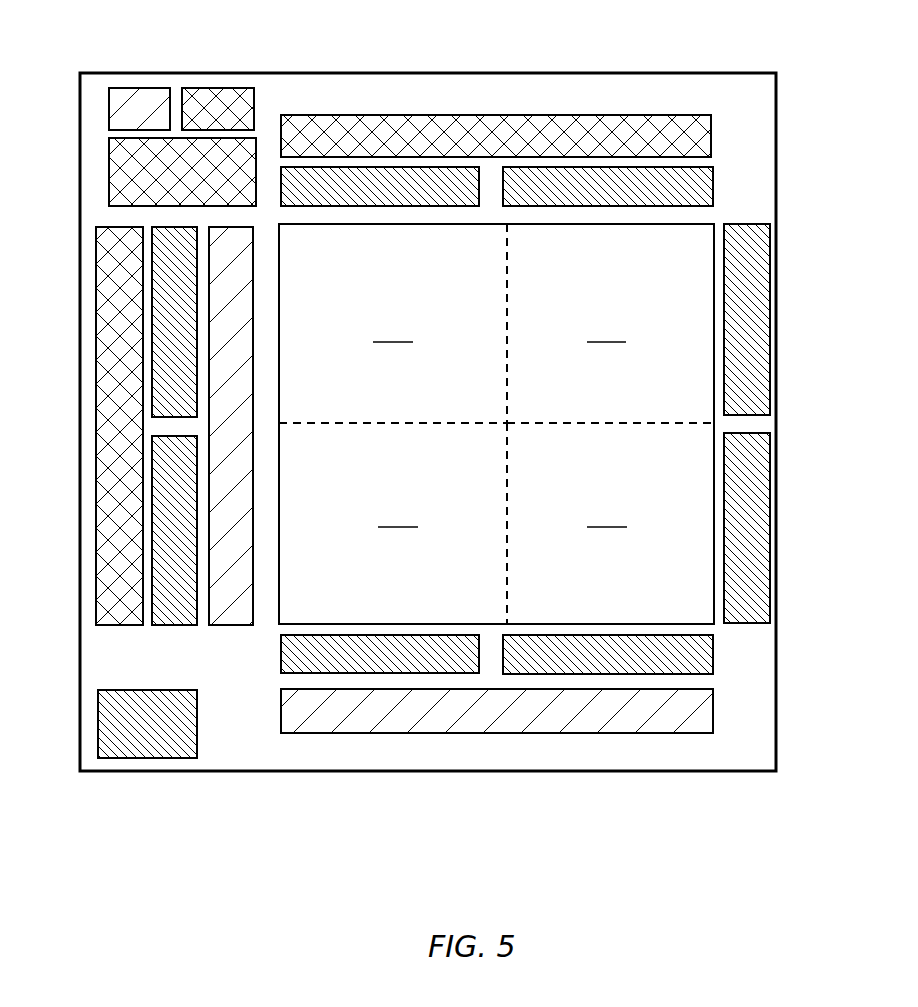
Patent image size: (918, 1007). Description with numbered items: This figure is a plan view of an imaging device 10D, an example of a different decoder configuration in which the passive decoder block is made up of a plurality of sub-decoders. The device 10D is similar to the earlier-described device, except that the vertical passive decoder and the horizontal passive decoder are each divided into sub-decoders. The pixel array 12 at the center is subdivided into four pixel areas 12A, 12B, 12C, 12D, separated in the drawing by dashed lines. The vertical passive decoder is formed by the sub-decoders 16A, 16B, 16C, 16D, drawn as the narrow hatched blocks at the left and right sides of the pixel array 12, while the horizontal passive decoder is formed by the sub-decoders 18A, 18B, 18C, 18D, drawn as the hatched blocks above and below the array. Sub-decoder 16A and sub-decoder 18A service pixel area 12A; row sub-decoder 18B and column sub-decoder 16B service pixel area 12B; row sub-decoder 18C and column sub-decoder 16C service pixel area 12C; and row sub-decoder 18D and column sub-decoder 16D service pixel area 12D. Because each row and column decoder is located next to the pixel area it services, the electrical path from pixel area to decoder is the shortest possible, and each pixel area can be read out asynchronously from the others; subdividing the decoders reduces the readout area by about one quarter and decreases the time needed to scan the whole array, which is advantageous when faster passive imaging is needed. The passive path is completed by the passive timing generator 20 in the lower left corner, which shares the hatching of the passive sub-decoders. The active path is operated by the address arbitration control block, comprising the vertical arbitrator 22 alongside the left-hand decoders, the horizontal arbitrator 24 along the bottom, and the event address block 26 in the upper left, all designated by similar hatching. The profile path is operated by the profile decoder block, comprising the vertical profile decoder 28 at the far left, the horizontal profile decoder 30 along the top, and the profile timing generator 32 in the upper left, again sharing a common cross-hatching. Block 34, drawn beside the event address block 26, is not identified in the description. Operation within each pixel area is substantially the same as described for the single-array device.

The device 10D is at (582, 810).
The pixel array 12 is at (546, 382).
The pixel area 12A is at (440, 323).
The pixel area 12B is at (610, 371).
The pixel area 12C is at (393, 475).
The pixel area 12D is at (567, 523).
The sub-decoder 16A is at (178, 226).
The column sub-decoder 16B is at (765, 302).
The column sub-decoder 16C is at (162, 626).
The column sub-decoder 16D is at (768, 487).
The sub-decoder 18A is at (280, 192).
The row sub-decoder 18B is at (713, 185).
The row sub-decoder 18C is at (280, 652).
The row sub-decoder 18D is at (715, 653).
The passive timing generator 20 is at (197, 760).
The vertical arbitrator 22 is at (222, 626).
The horizontal arbitrator 24 is at (627, 733).
The event address block 26 is at (157, 83).
The vertical profile decoder 28 is at (100, 472).
The horizontal profile decoder 30 is at (712, 142).
The profile timing generator 32 is at (118, 172).
The component 34 is at (213, 83).